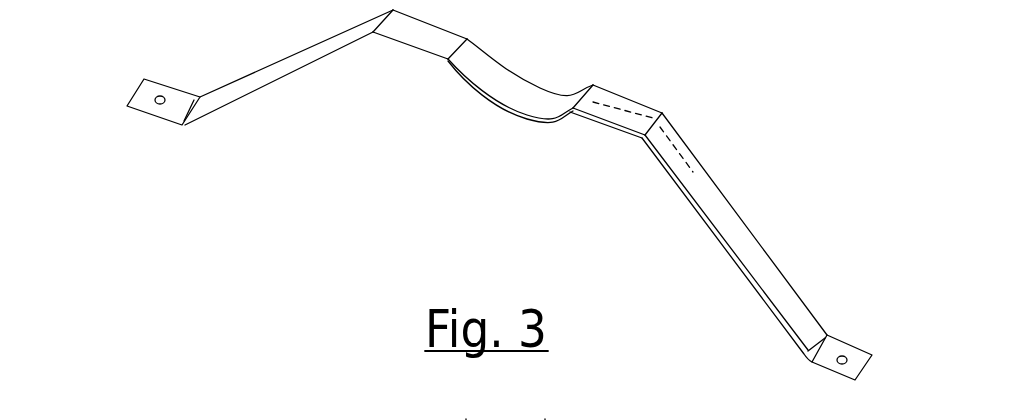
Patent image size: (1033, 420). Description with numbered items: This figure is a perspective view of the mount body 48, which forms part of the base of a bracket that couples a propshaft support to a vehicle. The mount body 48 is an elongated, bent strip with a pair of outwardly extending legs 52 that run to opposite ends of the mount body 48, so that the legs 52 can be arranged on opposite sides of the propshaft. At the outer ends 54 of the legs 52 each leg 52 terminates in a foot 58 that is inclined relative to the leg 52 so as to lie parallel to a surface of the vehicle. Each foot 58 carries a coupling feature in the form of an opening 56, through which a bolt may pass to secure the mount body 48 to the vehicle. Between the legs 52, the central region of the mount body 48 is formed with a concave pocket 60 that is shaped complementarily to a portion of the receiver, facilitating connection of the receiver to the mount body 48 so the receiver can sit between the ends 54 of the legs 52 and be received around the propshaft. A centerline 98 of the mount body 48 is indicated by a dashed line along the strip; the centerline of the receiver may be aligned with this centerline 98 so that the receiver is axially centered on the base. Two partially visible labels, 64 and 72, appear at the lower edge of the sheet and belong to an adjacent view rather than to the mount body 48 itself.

The mount body 48 is at (486, 212).
The legs 52 is at (293, 77).
The ends 54 is at (127, 100).
The opening 56 is at (157, 102).
The foot 58 is at (152, 89).
The concave pocket 60 is at (541, 88).
The centerline 98 is at (631, 112).
The bracket 64 is at (466, 419).
The bracket arm 72 is at (545, 419).